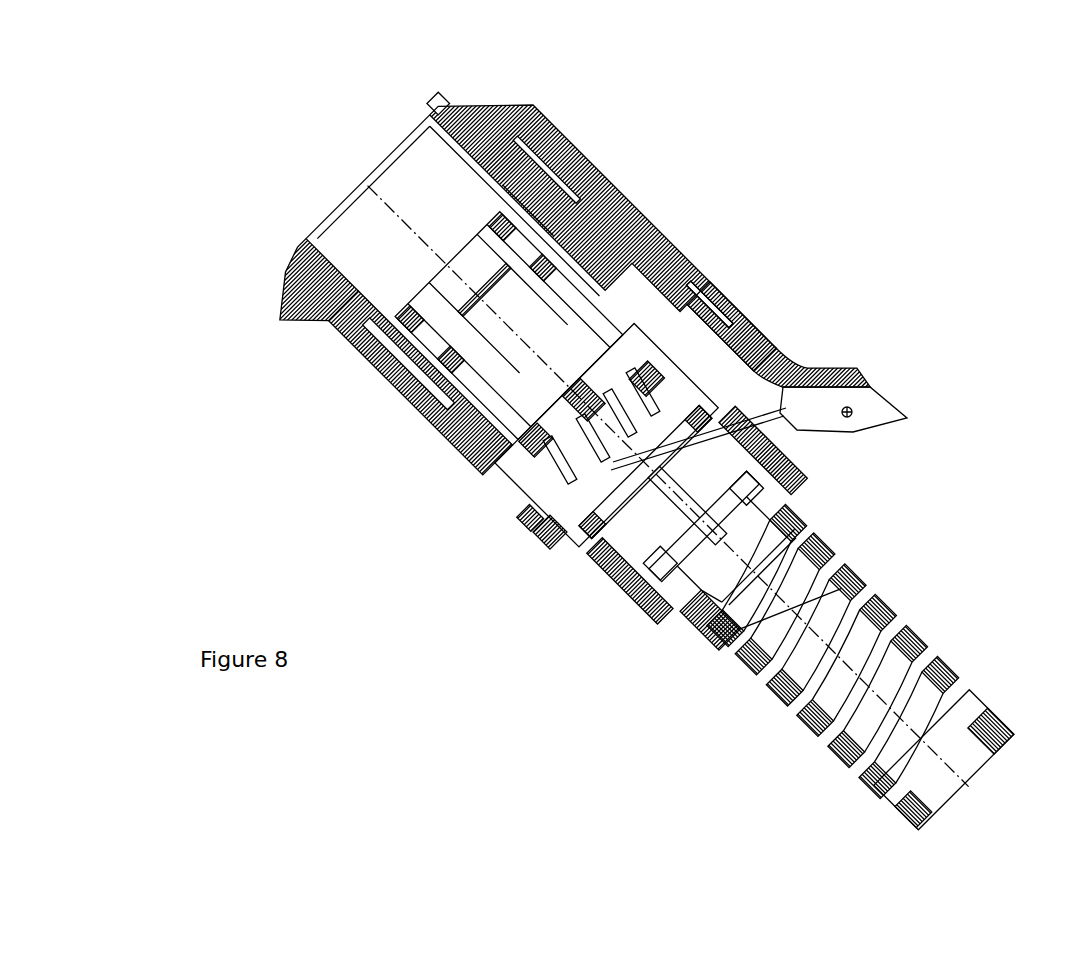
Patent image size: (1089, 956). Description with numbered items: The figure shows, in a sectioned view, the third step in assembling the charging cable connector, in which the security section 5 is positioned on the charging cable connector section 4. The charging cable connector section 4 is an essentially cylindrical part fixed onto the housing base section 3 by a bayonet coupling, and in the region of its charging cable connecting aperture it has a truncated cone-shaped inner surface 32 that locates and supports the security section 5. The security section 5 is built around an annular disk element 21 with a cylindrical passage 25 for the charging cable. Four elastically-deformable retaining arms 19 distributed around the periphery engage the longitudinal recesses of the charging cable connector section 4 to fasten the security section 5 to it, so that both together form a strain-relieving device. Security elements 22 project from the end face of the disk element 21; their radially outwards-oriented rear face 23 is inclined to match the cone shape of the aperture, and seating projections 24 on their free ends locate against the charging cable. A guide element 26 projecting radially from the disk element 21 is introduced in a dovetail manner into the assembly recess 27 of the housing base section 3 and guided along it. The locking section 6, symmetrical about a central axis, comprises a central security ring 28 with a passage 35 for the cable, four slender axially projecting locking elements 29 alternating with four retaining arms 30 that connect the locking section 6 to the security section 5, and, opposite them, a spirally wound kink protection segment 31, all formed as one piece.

The housing base section 3 is at (293, 330).
The charging cable connector section 4 is at (377, 378).
The security section 5 is at (503, 556).
The locking section 6 is at (1008, 541).
The retaining arms 19 is at (533, 473).
The disk element 21 is at (546, 552).
The security elements 22 is at (641, 385).
The rear face 23 is at (538, 444).
The seating projections 24 is at (581, 397).
The cylindrical passage 25 is at (637, 482).
The guide element 26 is at (738, 350).
The assembly recess 27 is at (700, 278).
The security ring 28 is at (678, 600).
The locking elements 29 is at (622, 576).
The retaining arms 30 is at (752, 478).
The kink protection segment 31 is at (808, 673).
The inner surface 32 is at (578, 326).
The passage 35 is at (717, 506).